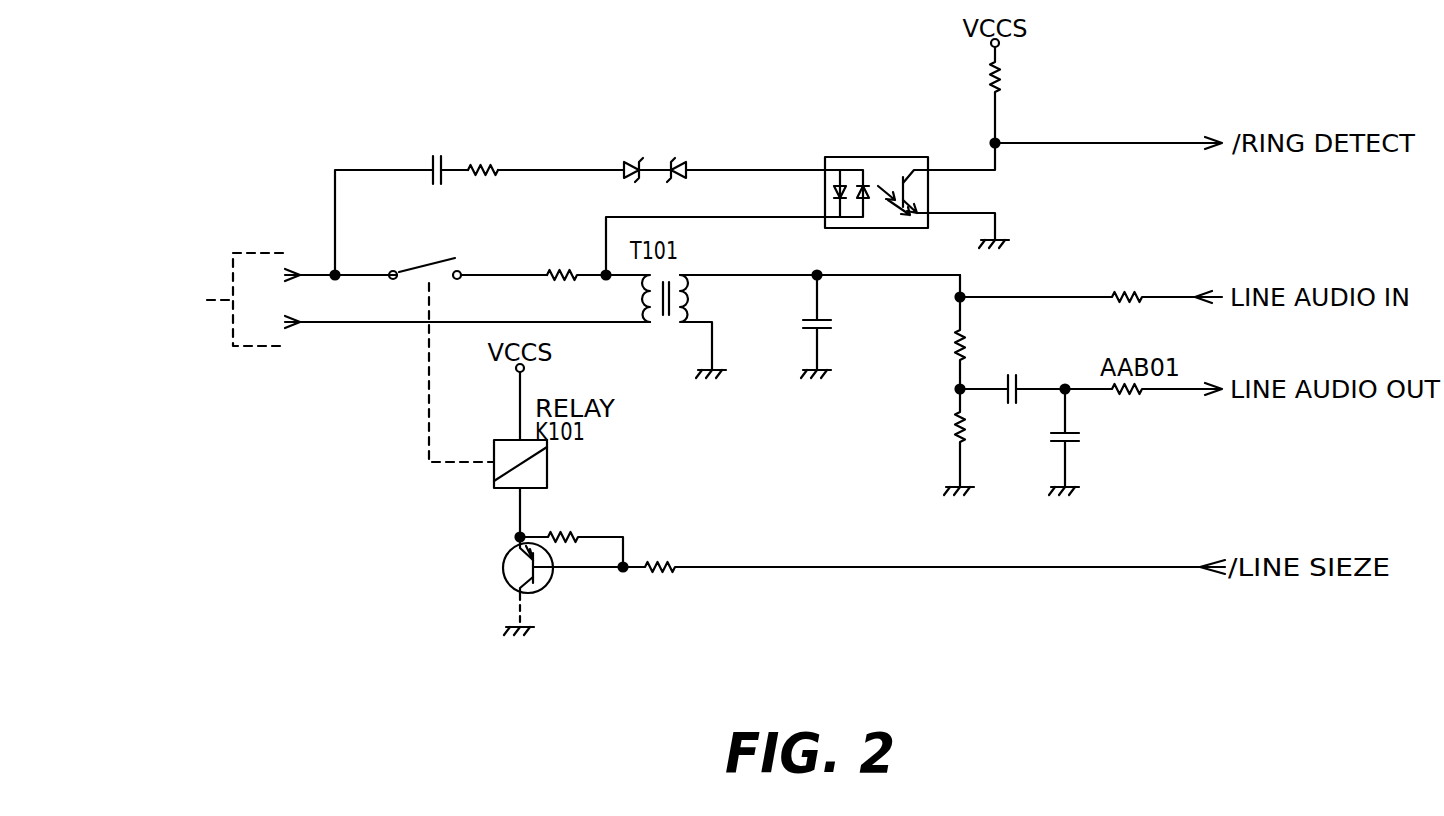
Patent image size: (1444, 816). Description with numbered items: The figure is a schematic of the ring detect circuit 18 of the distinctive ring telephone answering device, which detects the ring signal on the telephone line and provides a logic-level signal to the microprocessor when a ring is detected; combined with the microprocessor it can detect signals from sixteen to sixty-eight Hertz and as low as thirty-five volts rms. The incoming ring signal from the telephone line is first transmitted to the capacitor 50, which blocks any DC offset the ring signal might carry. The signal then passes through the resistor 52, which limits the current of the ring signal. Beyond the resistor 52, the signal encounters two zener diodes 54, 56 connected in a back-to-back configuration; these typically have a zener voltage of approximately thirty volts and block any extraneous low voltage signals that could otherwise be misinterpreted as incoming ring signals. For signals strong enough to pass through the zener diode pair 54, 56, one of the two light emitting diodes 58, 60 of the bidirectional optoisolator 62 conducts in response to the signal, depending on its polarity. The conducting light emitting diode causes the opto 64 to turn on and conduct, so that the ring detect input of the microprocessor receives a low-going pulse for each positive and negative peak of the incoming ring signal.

The ring detect circuit 18 is at (307, 155).
The capacitor 50 is at (437, 155).
The resistor 52 is at (483, 161).
The zener diode 54 is at (632, 163).
The zener diode 56 is at (678, 163).
The light emitting diode 58 is at (841, 202).
The light emitting diode 60 is at (868, 198).
The bidirectional optoisolator 62 is at (815, 155).
The opto 64 is at (923, 180).